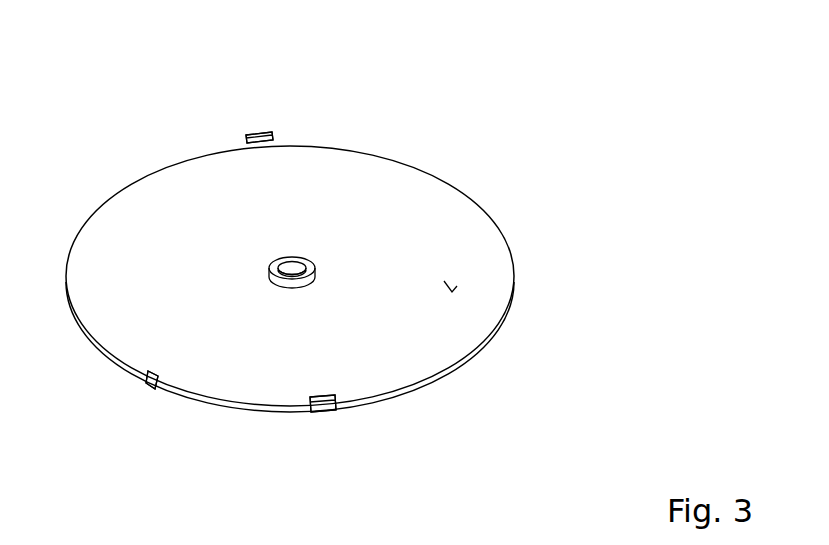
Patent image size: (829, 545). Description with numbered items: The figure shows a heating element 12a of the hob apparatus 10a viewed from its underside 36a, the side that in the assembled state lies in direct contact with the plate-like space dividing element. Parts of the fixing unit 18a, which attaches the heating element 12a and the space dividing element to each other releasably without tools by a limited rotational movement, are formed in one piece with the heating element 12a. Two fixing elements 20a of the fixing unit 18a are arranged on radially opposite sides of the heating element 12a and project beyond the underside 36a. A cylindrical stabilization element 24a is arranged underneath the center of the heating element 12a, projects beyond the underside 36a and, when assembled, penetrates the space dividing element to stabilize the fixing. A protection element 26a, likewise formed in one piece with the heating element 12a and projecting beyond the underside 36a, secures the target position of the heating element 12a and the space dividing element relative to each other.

The hob apparatus 10a is at (580, 110).
The heating element 12a is at (430, 218).
The fixing unit 18a is at (257, 127).
The fixing element 20a is at (265, 136).
The stabilization element 24a is at (296, 258).
The protection element 26a is at (148, 385).
The underside 36a is at (452, 281).